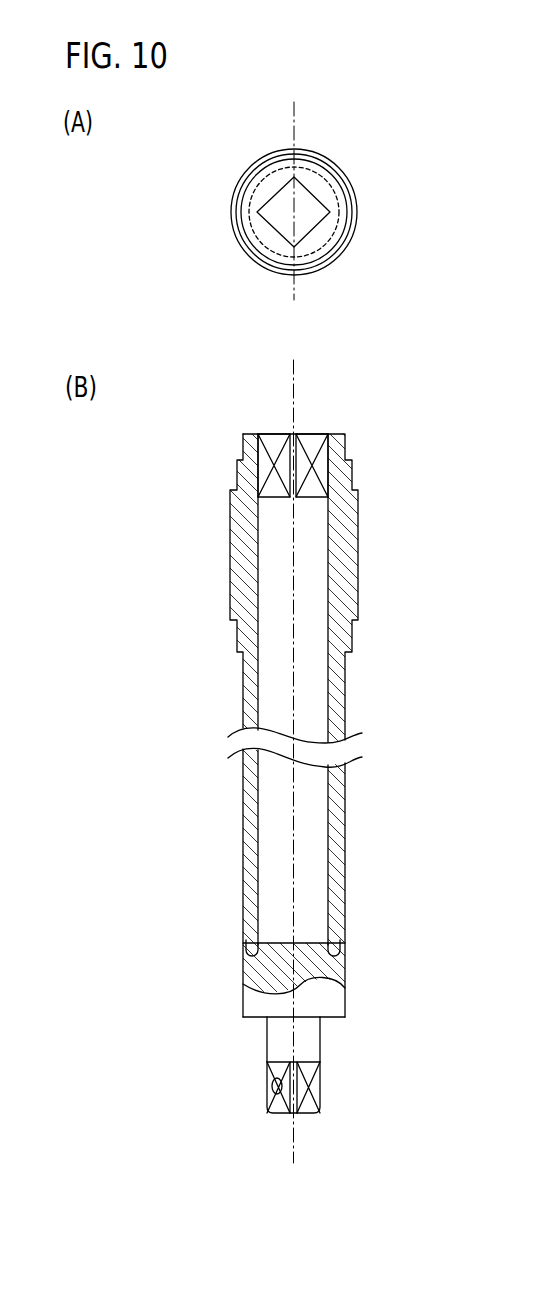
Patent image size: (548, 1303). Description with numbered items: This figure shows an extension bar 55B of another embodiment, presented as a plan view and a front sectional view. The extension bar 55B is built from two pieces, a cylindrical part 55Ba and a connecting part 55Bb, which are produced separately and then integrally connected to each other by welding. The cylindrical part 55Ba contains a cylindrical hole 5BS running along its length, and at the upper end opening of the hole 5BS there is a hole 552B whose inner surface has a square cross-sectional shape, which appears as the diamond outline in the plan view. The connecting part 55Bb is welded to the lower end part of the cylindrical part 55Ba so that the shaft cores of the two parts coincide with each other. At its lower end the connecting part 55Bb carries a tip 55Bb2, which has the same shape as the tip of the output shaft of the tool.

The extension bar 55B is at (195, 207).
The cylindrical hole 5BS is at (261, 176).
The hole having a square cross-sectional inner surface 552B is at (317, 191).
The cylindrical part 55Ba is at (243, 818).
The connecting part 55Bb is at (346, 970).
The tip 55Bb2 is at (322, 1085).